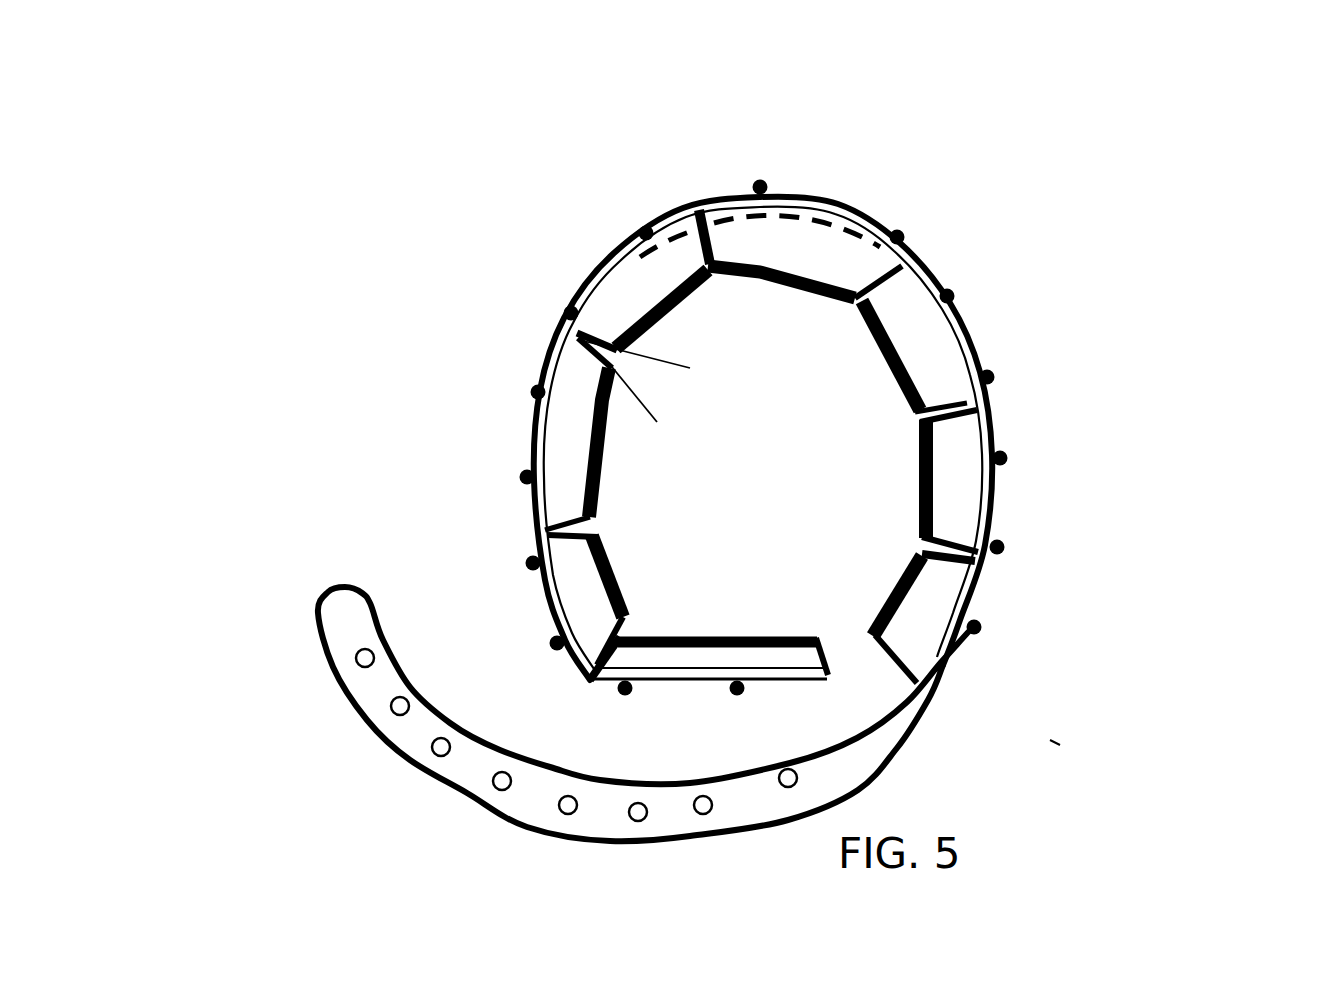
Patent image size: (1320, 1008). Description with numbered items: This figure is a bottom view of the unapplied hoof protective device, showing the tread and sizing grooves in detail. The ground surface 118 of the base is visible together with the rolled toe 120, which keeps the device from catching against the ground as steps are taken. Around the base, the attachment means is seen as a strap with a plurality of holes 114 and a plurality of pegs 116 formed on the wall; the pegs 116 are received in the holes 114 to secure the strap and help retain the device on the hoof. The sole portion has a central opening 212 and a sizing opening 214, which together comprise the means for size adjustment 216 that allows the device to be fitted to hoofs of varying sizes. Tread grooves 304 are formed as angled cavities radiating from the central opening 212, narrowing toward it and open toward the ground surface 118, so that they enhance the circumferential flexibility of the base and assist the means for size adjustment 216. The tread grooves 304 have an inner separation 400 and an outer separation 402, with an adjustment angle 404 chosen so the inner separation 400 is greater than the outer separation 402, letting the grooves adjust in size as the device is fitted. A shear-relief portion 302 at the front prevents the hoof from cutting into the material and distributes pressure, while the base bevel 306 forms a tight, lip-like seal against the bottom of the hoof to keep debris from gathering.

The holes 114 is at (397, 710).
The pegs 116 is at (1007, 468).
The ground surface 118 is at (580, 600).
The rolled toe 120 is at (965, 343).
The central opening 212 is at (848, 488).
The sizing opening 214 is at (847, 655).
The means for size adjustment 216 is at (1138, 830).
The shear-relief portion 302 is at (870, 215).
The tread grooves 304 is at (580, 335).
The base bevel 306 is at (600, 482).
The inner separation 400 is at (740, 297).
The outer separation 402 is at (698, 211).
The adjustment angle 404 is at (678, 370).